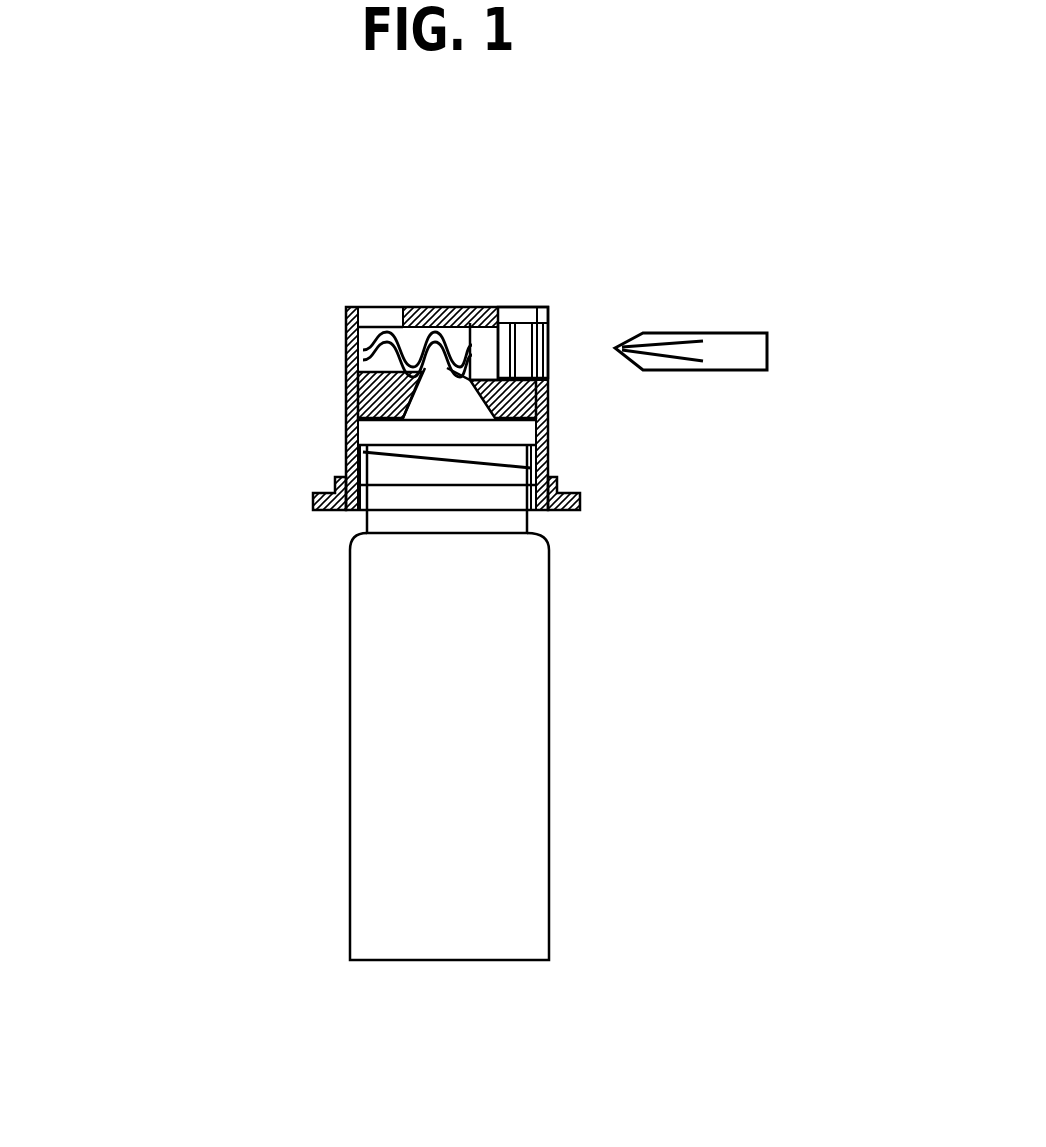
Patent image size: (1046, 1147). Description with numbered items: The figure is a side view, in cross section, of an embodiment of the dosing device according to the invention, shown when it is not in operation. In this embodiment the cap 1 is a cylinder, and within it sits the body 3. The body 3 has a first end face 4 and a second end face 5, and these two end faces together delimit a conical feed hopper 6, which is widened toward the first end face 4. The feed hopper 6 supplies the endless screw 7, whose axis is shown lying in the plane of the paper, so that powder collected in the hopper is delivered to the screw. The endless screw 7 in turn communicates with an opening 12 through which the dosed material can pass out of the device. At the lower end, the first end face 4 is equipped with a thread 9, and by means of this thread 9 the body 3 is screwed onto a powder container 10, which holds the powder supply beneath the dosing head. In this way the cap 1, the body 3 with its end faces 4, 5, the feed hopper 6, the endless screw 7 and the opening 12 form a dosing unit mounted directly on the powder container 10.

The cap 1 is at (342, 317).
The body 3 is at (347, 403).
The first end face 4 is at (313, 513).
The second end face 5 is at (465, 309).
The conical feed hopper 6 is at (447, 402).
The endless screw 7 is at (347, 353).
The thread 9 is at (467, 463).
The powder container 10 is at (350, 750).
The opening 12 is at (370, 326).